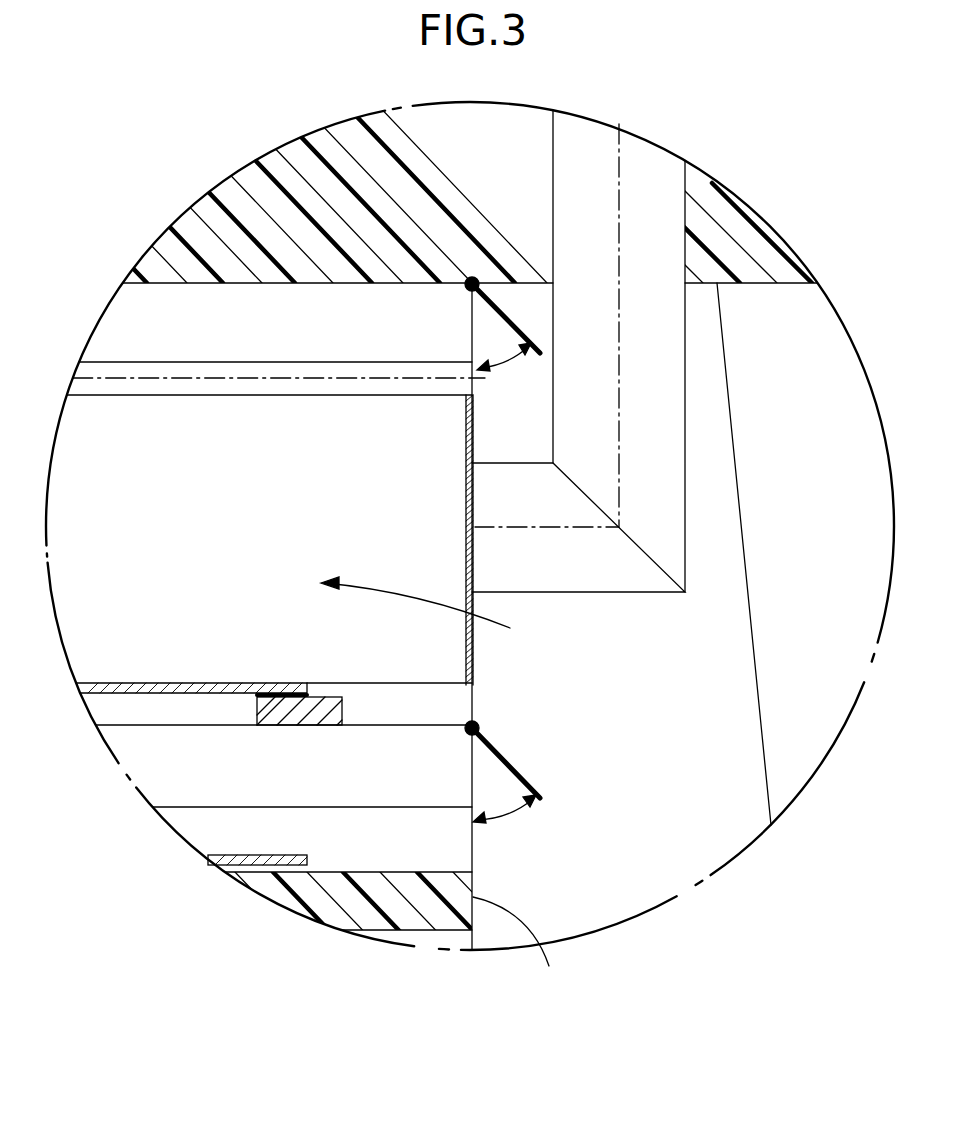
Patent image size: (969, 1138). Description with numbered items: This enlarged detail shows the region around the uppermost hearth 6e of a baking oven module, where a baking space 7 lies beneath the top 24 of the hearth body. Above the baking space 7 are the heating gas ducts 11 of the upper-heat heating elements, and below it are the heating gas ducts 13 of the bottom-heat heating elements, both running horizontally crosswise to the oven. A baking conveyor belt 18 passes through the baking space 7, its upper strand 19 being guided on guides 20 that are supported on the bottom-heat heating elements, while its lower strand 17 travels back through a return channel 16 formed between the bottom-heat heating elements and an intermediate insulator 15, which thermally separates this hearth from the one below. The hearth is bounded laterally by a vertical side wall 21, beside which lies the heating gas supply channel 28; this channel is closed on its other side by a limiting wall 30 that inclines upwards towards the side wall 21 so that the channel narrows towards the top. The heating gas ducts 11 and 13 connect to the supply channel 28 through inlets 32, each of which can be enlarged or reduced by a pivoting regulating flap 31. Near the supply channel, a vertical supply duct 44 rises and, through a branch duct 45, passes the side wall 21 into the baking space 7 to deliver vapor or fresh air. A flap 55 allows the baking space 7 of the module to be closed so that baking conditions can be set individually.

The top of the hearth body 24 is at (353, 130).
The vertical supply duct 44 is at (664, 168).
The branch duct 45 is at (604, 570).
The heating gas ducts 11 is at (256, 340).
The baking space 7 is at (106, 525).
The flap 55 is at (467, 473).
The hearth 6e is at (432, 610).
The regulating flap 31 is at (507, 313).
The inlet 32 is at (500, 352).
The upper strand 19 is at (115, 692).
The baking conveyor belt 18 is at (202, 684).
The guides 20 is at (303, 713).
The heating gas ducts 13 is at (206, 783).
The lower strand 17 is at (255, 860).
The return channel 16 is at (374, 850).
The intermediate insulator 15 is at (327, 907).
The heating gas supply channel 28 is at (604, 817).
The side wall 21 is at (522, 946).
The limiting wall 30 is at (752, 600).